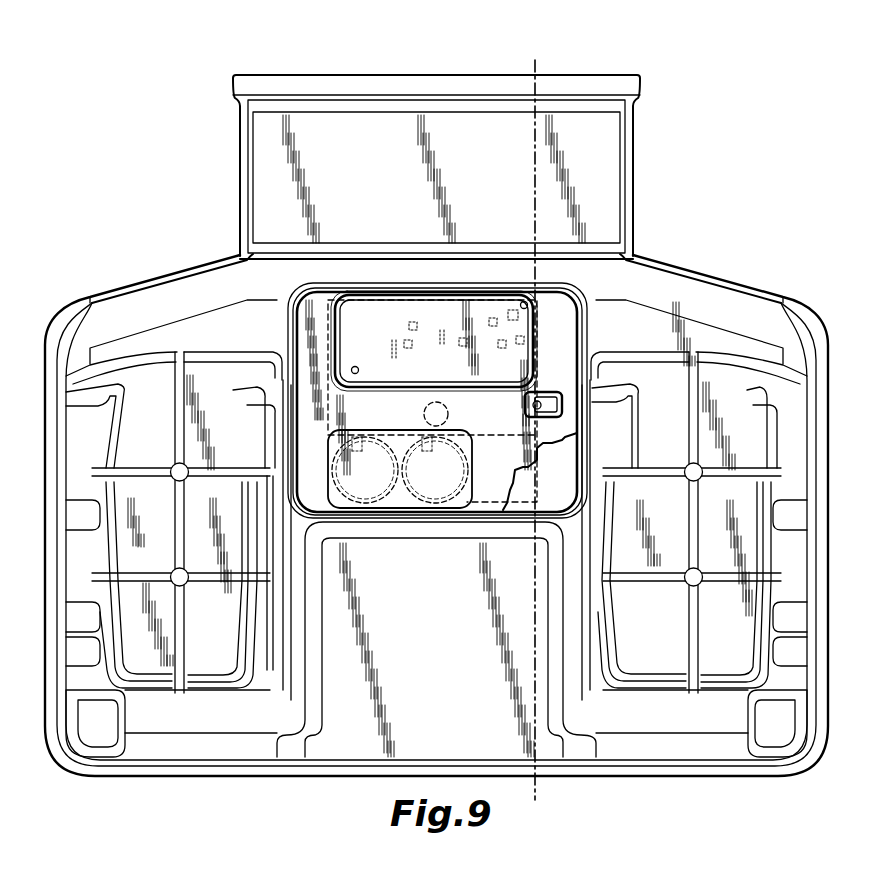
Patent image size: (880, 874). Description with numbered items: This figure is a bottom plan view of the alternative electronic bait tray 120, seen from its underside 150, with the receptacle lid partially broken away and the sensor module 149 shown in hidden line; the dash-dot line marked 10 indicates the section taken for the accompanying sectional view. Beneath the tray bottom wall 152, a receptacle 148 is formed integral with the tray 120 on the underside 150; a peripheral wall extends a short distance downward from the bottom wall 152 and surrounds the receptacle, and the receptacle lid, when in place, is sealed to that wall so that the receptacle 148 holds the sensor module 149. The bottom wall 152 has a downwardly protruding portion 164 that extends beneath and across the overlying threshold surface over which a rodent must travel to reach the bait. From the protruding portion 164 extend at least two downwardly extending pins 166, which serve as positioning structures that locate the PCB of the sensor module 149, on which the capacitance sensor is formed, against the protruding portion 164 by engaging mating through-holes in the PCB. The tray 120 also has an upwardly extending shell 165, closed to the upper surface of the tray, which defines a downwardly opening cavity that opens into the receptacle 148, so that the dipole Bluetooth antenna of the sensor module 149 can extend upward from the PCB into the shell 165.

The section line 10 is at (503, 57).
The bait tray 120 is at (700, 178).
The receptacle 148 is at (578, 300).
The sensor module 149 is at (487, 438).
The underside 150 is at (198, 724).
The tray bottom wall 152 is at (454, 666).
The downwardly protruding portion 164 is at (501, 368).
The shell 165 is at (530, 406).
The pins 166 is at (357, 367).